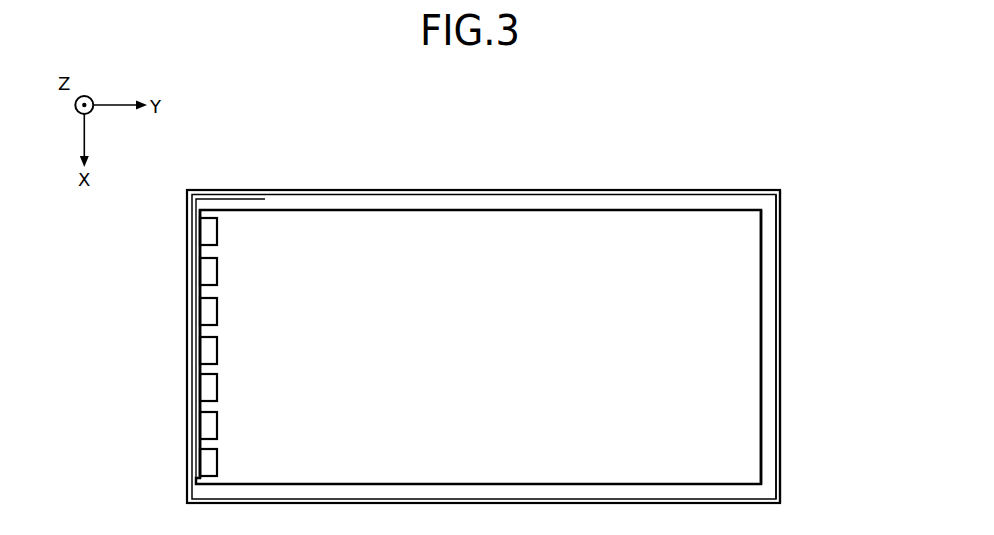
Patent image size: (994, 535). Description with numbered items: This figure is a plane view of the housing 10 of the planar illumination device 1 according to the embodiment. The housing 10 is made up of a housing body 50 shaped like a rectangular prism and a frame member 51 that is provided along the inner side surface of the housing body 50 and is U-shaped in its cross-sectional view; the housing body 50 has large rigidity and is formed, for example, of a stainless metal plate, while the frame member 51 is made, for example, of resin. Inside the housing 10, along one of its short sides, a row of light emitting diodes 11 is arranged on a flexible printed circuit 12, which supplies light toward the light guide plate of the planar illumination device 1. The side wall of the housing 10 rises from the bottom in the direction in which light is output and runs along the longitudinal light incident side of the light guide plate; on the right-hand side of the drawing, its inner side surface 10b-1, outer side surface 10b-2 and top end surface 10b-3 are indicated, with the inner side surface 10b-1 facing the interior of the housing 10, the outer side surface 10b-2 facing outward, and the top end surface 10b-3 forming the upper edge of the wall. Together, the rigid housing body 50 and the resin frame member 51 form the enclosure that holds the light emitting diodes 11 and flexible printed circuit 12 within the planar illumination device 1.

The planar illumination device 1 is at (738, 162).
The housing 10 is at (562, 143).
The housing body 50 is at (485, 190).
The frame member 51 is at (535, 207).
The light emitting diodes 11 is at (208, 232).
The flexible printed circuit 12 is at (197, 201).
The inner side surface 10b-1 is at (758, 318).
The outer side surface 10b-2 is at (779, 348).
The top end surface 10b-3 is at (775, 375).